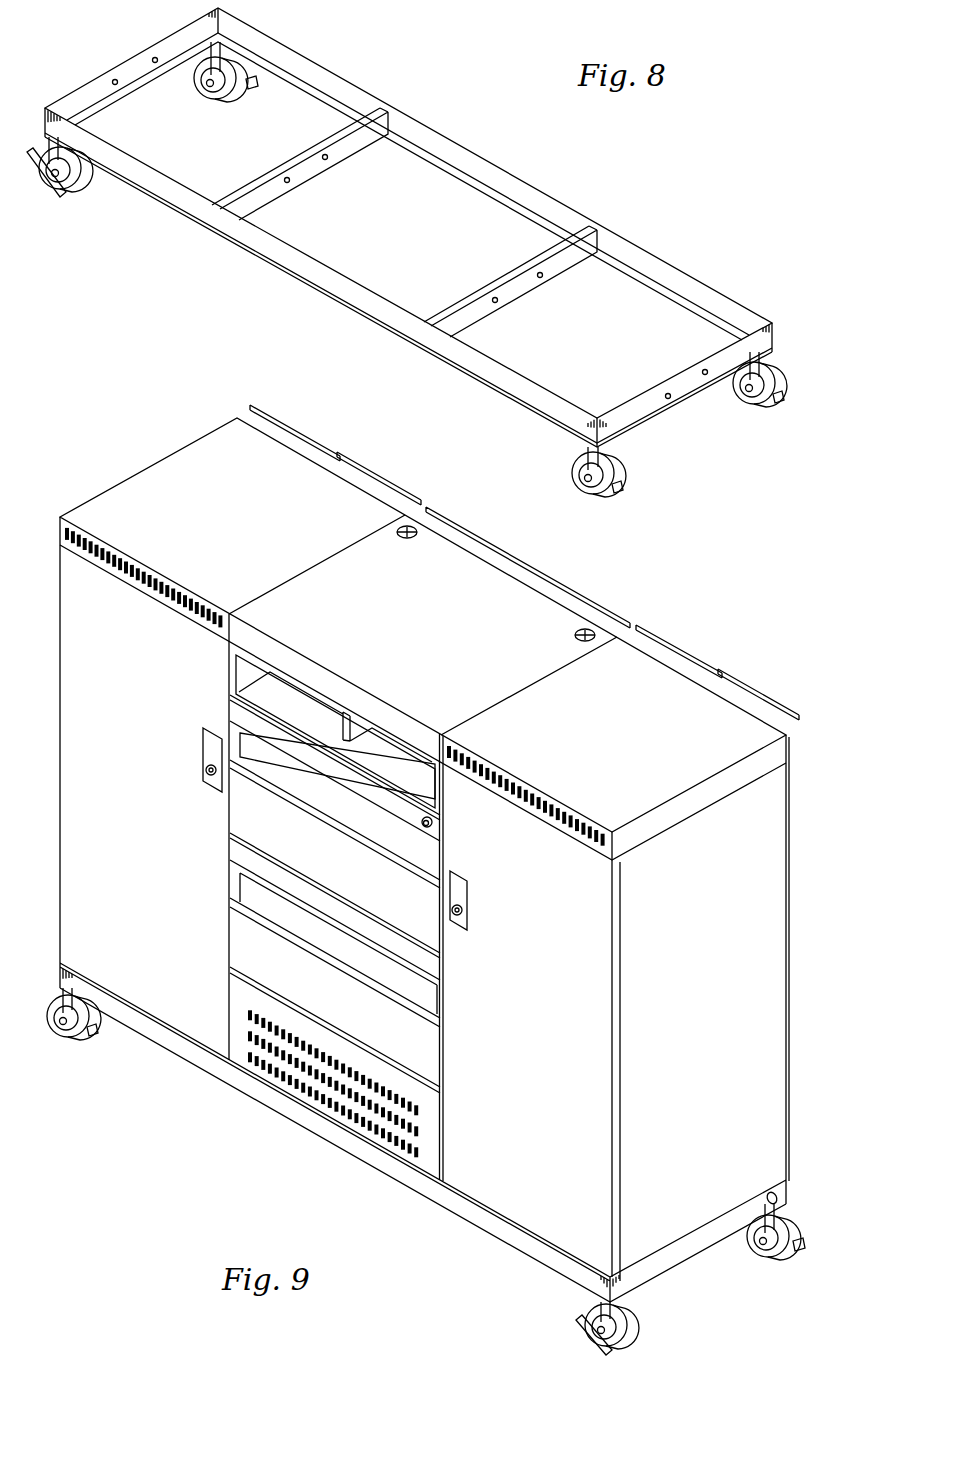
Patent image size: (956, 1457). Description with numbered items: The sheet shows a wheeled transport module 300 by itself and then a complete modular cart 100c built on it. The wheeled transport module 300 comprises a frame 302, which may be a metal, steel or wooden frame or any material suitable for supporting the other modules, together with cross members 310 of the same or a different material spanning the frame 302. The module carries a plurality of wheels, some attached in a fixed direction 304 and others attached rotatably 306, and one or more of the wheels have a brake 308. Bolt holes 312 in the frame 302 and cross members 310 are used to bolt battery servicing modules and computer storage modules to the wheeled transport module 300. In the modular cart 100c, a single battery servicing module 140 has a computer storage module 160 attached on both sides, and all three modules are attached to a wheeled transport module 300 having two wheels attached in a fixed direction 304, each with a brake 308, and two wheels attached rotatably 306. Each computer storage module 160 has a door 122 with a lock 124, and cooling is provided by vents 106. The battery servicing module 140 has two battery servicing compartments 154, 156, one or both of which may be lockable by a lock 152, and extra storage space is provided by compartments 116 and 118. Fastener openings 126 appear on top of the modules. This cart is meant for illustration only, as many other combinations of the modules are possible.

In FIG. 9, the modular cart 100c is at (286, 1191).
In FIG. 9, the vents 106 is at (140, 568).
In FIG. 9, the compartment 116 is at (300, 708).
In FIG. 9, the compartment 118 is at (398, 762).
In FIG. 9, the door 122 is at (161, 873).
In FIG. 9, the lock 124 is at (204, 768).
In FIG. 9, the fastener hole 126 is at (396, 529).
In FIG. 9, the battery servicing module 140 is at (528, 567).
In FIG. 9, the lock 152 is at (436, 823).
In FIG. 9, the battery servicing compartment 154 is at (354, 1010).
In FIG. 9, the battery servicing compartment 156 is at (356, 872).
In FIG. 9, the computer storage module 160 is at (524, 562).
In FIG. 8, the wheeled transport module 300 is at (599, 164).
In FIG. 9, the wheeled transport module 300 is at (203, 1076).
In FIG. 8, the frame 302 is at (699, 273).
In FIG. 8, the wheels attached in a fixed direction 304 is at (204, 94).
In FIG. 9, the wheels attached in a fixed direction 304 is at (770, 1262).
In FIG. 8, the wheels attached rotatably 306 is at (622, 470).
In FIG. 9, the wheels attached rotatably 306 is at (72, 1043).
In FIG. 8, the brake 308 is at (250, 92).
In FIG. 9, the brake 308 is at (806, 1245).
In FIG. 8, the cross members 310 is at (307, 186).
In FIG. 8, the bolt holes 312 is at (155, 58).